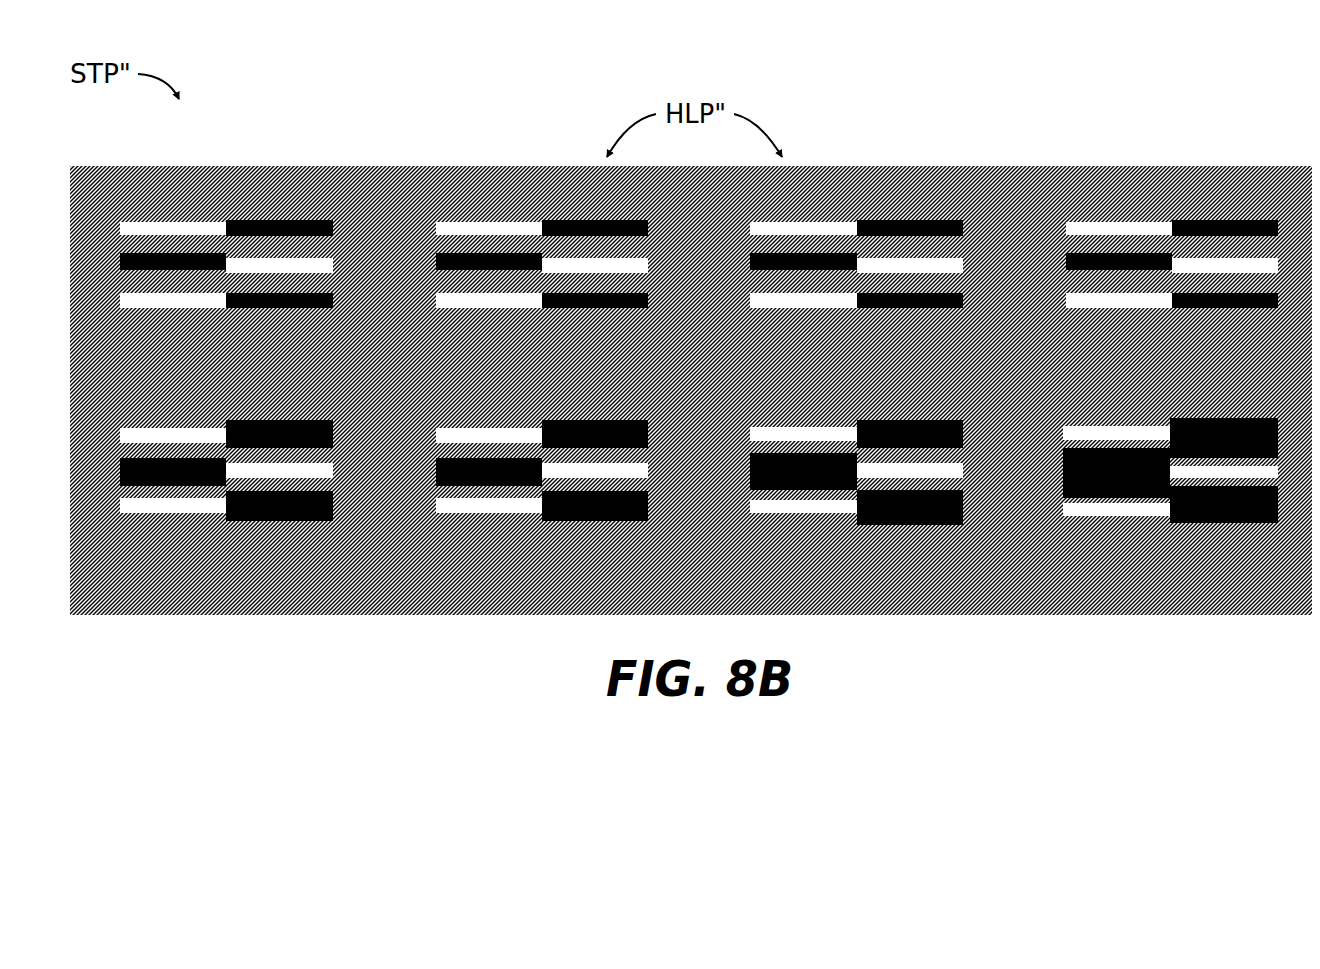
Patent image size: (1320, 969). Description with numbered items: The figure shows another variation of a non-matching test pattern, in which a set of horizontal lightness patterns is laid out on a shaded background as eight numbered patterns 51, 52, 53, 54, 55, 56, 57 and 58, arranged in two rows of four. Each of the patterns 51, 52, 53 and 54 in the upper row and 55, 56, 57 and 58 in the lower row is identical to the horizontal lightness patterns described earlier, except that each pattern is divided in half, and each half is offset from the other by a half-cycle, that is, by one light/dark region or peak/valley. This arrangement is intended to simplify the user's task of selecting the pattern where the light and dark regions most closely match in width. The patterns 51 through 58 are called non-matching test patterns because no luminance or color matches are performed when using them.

The structured light pattern cell 51 is at (226, 297).
The structured light pattern cell 52 is at (542, 297).
The structured light pattern cell 53 is at (856, 297).
The structured light pattern cell 54 is at (1172, 297).
The structured light pattern cell 55 is at (226, 501).
The structured light pattern cell 56 is at (542, 501).
The structured light pattern cell 57 is at (856, 501).
The structured light pattern cell 58 is at (1170, 500).